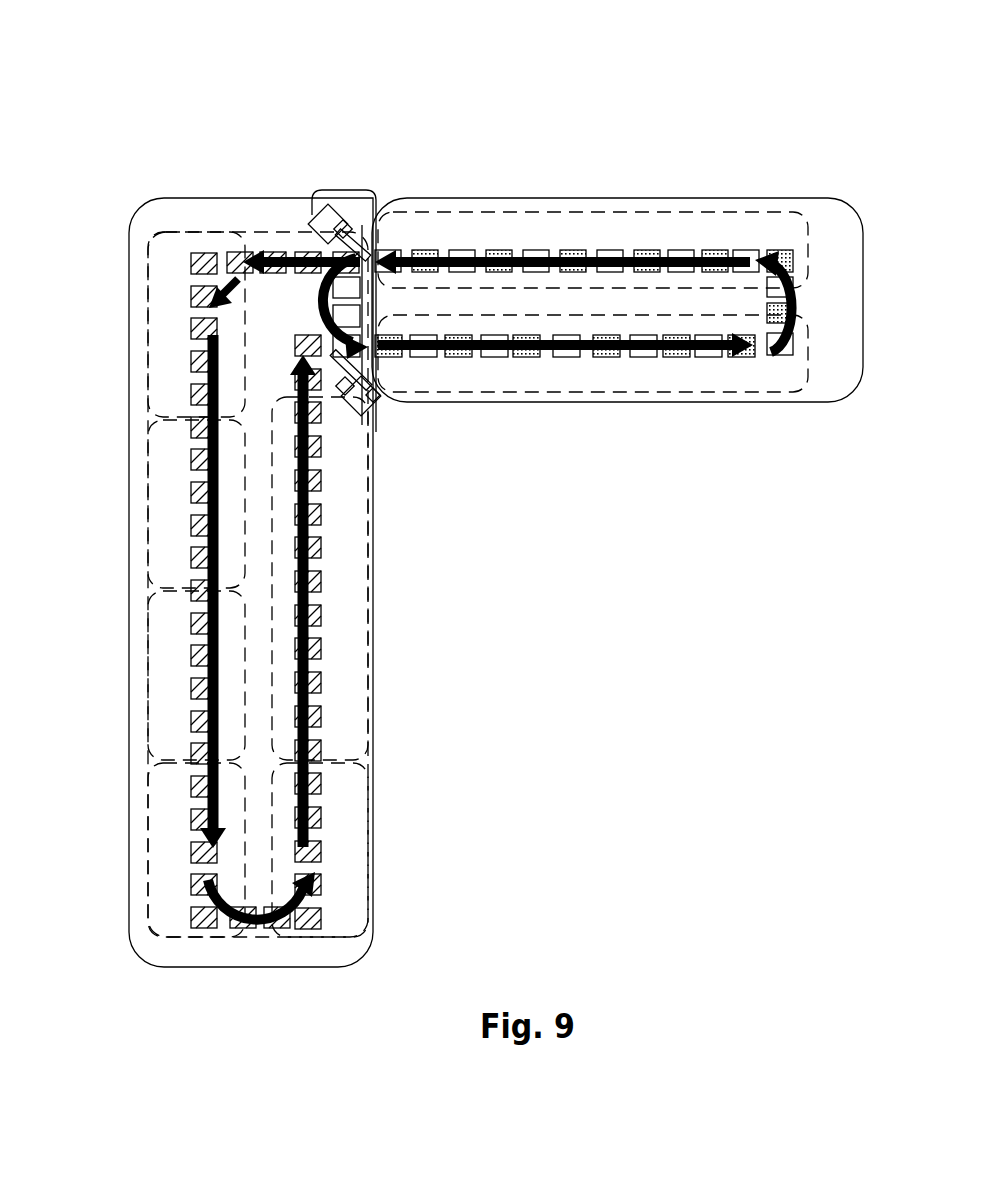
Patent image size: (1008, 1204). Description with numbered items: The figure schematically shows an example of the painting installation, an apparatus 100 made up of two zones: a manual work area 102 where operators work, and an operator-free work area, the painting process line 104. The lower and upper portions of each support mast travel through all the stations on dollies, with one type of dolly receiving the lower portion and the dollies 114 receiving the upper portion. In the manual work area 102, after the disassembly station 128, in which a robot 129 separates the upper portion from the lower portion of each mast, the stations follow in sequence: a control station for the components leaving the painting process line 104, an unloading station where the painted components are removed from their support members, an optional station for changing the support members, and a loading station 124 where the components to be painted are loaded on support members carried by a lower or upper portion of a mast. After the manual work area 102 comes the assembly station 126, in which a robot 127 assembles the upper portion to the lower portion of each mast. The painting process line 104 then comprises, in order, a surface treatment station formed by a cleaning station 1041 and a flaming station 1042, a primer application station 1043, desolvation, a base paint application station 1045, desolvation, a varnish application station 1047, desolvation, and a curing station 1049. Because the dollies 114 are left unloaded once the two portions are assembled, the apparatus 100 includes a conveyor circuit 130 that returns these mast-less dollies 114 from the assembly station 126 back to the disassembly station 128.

The apparatus 100 is at (579, 146).
The manual work area 102 is at (713, 404).
The painting process line 104 is at (377, 857).
The dolly for upper portion 114 is at (300, 309).
The loading station 124 is at (783, 201).
The assembly station 126 is at (380, 192).
The robot 127 is at (342, 197).
The disassembly station 128 is at (380, 420).
The robot 129 is at (386, 407).
The conveyor circuit 130 is at (312, 296).
The cleaning station 1041 is at (175, 378).
The flaming station 1042 is at (175, 547).
The primer application station 1043 is at (173, 718).
The base paint application station 1045 is at (175, 860).
The varnish application station 1047 is at (347, 802).
The curing station 1049 is at (335, 618).